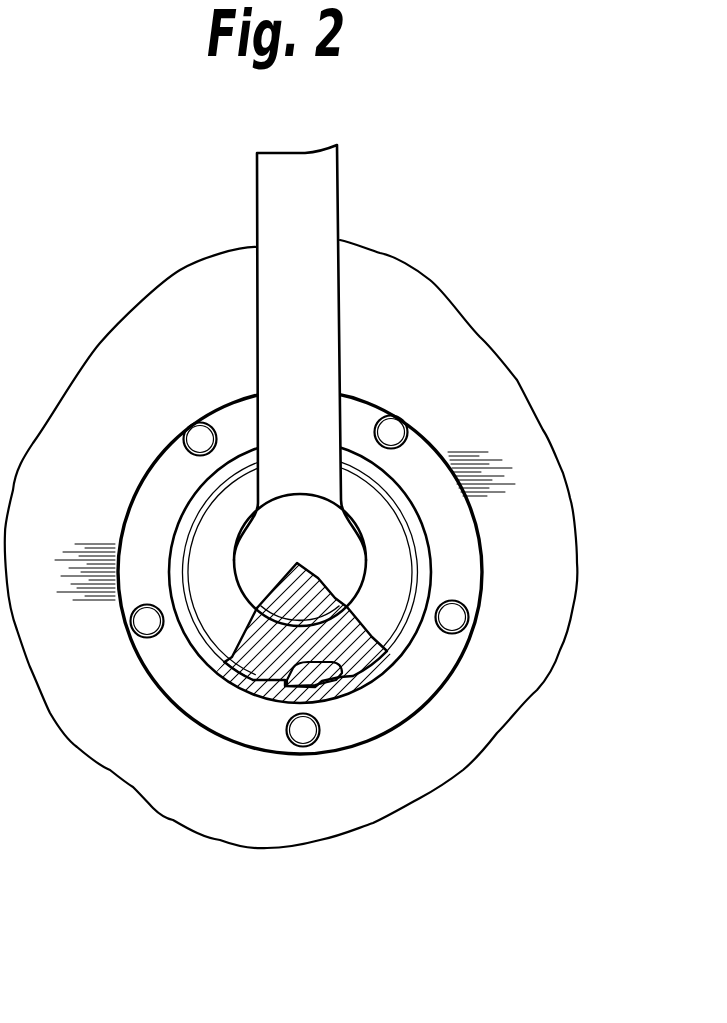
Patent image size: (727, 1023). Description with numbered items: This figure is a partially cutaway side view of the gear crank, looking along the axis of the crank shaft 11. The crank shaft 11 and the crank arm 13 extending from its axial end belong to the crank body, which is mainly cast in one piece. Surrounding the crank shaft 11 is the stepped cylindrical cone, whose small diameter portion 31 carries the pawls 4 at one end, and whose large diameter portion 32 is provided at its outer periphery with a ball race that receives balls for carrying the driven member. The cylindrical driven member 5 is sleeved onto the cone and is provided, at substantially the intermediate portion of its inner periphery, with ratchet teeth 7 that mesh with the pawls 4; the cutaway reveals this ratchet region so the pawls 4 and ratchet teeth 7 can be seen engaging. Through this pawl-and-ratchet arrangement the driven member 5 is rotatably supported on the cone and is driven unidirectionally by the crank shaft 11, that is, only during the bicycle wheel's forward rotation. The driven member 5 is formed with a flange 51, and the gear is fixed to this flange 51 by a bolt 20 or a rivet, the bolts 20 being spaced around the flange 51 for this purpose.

The crank arm 13 is at (322, 213).
The bolt 20 is at (395, 432).
The flange 51 is at (440, 447).
The driven member 5 is at (417, 522).
The large diameter portion 32 is at (402, 560).
The small diameter portion 31 is at (350, 640).
The crank shaft 11 is at (290, 612).
The pawls 4 is at (325, 667).
The ratchet teeth 7 is at (345, 675).